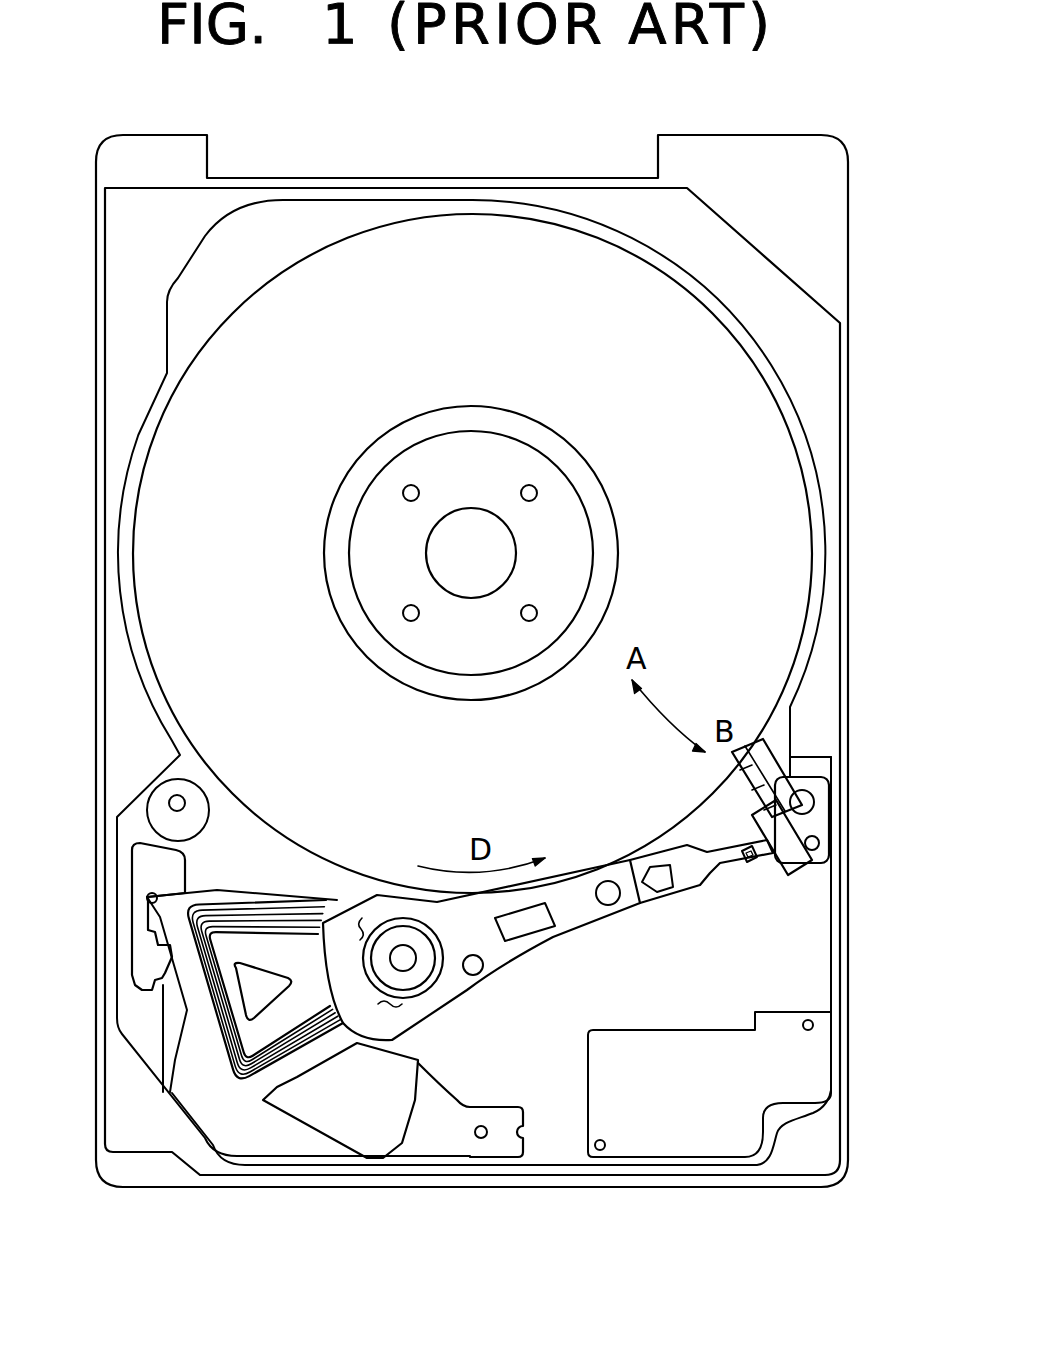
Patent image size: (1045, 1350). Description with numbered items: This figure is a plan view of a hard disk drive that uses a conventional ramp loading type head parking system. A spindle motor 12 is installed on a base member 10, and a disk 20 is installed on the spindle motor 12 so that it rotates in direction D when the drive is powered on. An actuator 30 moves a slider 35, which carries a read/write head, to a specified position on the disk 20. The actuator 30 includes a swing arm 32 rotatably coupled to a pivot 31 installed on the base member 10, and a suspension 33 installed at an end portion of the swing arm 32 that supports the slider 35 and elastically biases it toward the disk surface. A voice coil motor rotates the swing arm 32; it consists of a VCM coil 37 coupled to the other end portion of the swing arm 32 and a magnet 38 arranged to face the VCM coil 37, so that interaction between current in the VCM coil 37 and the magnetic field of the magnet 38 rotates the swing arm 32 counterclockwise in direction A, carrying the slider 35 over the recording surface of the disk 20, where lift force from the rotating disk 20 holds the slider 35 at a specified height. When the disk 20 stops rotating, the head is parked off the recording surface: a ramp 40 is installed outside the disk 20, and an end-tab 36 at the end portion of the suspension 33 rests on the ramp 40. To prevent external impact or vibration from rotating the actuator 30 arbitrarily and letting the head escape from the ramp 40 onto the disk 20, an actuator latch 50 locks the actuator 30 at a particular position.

The base member 10 is at (822, 702).
The spindle motor 12 is at (505, 462).
The disk 20 is at (788, 513).
The actuator 30 is at (493, 1025).
The pivot 31 is at (408, 963).
The swing arm 32 is at (537, 943).
The suspension 33 is at (717, 867).
The slider 35 is at (752, 863).
The end-tab 36 is at (800, 845).
The VCM coil 37 is at (243, 1078).
The magnet 38 is at (372, 1135).
The ramp 40 is at (770, 788).
The actuator latch 50 is at (140, 910).